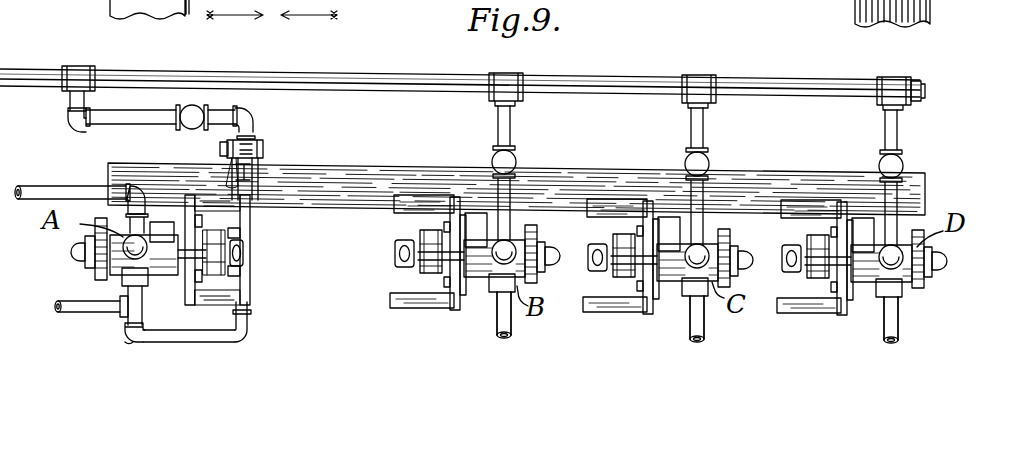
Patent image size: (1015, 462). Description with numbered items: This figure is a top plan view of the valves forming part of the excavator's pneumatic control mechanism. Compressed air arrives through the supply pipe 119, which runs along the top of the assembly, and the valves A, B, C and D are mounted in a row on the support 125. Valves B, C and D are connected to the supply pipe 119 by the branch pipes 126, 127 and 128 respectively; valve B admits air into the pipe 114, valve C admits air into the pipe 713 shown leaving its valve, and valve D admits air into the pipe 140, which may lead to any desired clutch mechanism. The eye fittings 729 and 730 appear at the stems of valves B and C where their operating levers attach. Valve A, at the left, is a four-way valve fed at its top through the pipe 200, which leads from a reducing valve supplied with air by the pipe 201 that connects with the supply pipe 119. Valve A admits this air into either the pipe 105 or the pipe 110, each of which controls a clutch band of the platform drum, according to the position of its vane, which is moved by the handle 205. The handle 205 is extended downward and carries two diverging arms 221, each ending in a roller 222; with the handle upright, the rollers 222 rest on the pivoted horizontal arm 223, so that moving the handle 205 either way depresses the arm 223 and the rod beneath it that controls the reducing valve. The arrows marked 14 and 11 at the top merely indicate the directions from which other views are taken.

The pipe 119 is at (19, 73).
The direction arrow 14 is at (252, 38).
The direction arrow 11 is at (305, 38).
The pipe 201 is at (236, 121).
The support 125 is at (164, 165).
The horizontal arm 223 is at (266, 163).
The pipe 110 is at (69, 189).
The roller 222 is at (249, 226).
The diverging downwardly extending arms 221 is at (248, 236).
The handle 205 is at (248, 263).
The pipe 105 is at (69, 298).
The pipe 200 is at (170, 331).
The valve stem eye 729 is at (401, 251).
The pipe 126 is at (512, 191).
The pipe 114 is at (496, 315).
The valve stem eye 730 is at (587, 252).
The pipe 127 is at (706, 195).
The outlet pipe 713 is at (704, 326).
The pipe 128 is at (876, 177).
The pipe 140 is at (898, 324).